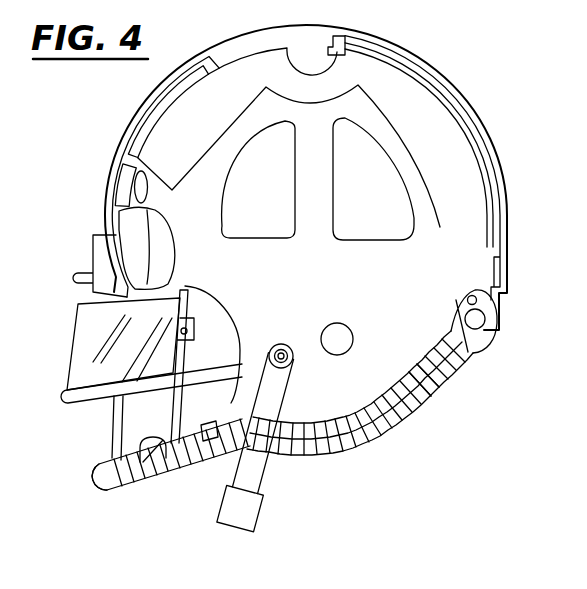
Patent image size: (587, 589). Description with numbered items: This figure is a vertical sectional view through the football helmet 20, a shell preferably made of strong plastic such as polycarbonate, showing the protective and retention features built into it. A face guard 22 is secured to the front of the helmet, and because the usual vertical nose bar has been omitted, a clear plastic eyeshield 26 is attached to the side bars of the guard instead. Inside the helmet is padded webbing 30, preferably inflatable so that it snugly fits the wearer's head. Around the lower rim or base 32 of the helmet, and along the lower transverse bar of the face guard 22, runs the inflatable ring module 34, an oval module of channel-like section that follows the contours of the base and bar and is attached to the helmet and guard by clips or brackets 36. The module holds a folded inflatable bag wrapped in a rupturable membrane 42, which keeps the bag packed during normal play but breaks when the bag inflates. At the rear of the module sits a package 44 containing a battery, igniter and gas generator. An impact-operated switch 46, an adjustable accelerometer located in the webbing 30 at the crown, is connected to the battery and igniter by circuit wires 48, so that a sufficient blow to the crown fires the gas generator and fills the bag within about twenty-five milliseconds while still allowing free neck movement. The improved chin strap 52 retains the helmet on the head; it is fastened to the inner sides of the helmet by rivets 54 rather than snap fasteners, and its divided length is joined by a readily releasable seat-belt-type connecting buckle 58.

The football helmet 20 is at (507, 192).
The face guard 22 is at (90, 404).
The eyeshield 26 is at (80, 332).
The padded webbing 30 is at (414, 162).
The lower rim or base 32 is at (395, 418).
The inflatable ring module 34 is at (446, 392).
The clips or brackets 36 is at (150, 477).
The rupturable membrane 42 is at (138, 486).
The package 44 is at (488, 310).
The impact-operated switch 46 is at (347, 34).
The circuit wires 48 is at (440, 103).
The chin strap 52 is at (266, 473).
The rivets 54 is at (290, 358).
The connecting buckle 58 is at (258, 512).